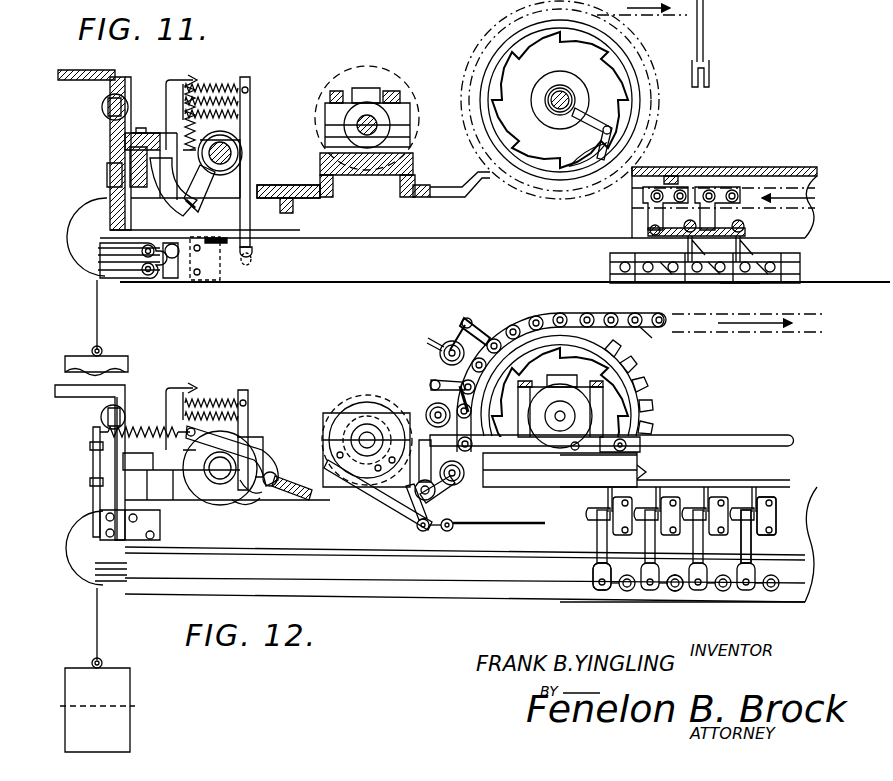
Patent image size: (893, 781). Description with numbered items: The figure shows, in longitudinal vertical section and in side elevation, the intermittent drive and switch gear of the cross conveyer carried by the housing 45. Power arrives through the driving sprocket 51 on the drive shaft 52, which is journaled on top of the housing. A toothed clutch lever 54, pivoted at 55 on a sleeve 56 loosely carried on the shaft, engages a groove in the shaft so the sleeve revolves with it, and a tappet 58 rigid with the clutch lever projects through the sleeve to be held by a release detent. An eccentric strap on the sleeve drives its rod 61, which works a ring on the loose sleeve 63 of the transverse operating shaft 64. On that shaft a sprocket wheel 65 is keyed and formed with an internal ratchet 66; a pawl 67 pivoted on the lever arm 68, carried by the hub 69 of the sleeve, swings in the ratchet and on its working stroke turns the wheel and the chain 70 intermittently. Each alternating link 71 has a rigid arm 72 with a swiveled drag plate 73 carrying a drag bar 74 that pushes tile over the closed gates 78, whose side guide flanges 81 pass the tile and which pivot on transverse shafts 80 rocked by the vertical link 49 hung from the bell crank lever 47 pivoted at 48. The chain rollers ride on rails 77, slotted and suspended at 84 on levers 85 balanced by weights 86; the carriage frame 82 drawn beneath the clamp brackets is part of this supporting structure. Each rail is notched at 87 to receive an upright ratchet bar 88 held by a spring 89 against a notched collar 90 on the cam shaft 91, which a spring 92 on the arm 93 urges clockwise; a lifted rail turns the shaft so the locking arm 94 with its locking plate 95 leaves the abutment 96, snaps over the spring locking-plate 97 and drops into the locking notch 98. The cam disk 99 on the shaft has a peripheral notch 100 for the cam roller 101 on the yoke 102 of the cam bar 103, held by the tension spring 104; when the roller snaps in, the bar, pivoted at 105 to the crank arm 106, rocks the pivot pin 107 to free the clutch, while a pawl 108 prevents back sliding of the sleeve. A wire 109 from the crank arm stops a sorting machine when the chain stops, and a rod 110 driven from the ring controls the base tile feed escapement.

In FIG. 11, the housing 45 is at (778, 160).
In FIG. 12, the housing 45 is at (777, 593).
In FIG. 12, the bell crank lever 47 is at (708, 505).
In FIG. 12, the pivot 48 is at (770, 516).
In FIG. 12, the vertically arranged link 49 is at (747, 547).
In FIG. 11, the driving sprocket 51 is at (363, 72).
In FIG. 11, the drive shaft 52 is at (376, 115).
In FIG. 12, the drive shaft 52 is at (342, 412).
In FIG. 12, the toothed clutch lever 54 is at (326, 448).
In FIG. 12, the pivot 55 is at (384, 420).
In FIG. 12, the sleeve 56 is at (350, 410).
In FIG. 12, the tappet 58 is at (434, 404).
In FIG. 12, the eccentric rod 61 is at (530, 446).
In FIG. 11, the loose sleeve 63 is at (546, 101).
In FIG. 11, the operating shaft 64 is at (548, 112).
In FIG. 12, the operating shaft 64 is at (573, 417).
In FIG. 12, the sprocket wheel 65 is at (642, 383).
In FIG. 11, the internal ratchet 66 is at (512, 60).
In FIG. 12, the internal ratchet 66 is at (560, 409).
In FIG. 11, the pawl 67 is at (568, 162).
In FIG. 11, the lever arm 68 is at (618, 125).
In FIG. 11, the hub 69 is at (557, 84).
In FIG. 12, the chain 70 is at (623, 305).
In FIG. 11, the alternating link 71 is at (665, 205).
In FIG. 12, the alternating link 71 is at (656, 336).
In FIG. 12, the rigid arm 72 is at (494, 343).
In FIG. 12, the drag plate 73 is at (466, 320).
In FIG. 11, the drag bar 74 is at (804, 250).
In FIG. 12, the drag bar 74 is at (440, 340).
In FIG. 11, the rails 77 is at (378, 275).
In FIG. 11, the horizontal gates 78 is at (737, 278).
In FIG. 12, the transverse shaft 80 is at (673, 592).
In FIG. 12, the side guide flanges 81 is at (616, 600).
In FIG. 11, the carriage frame 82 is at (612, 268).
In FIG. 11, the pivotal suspension 84 is at (172, 262).
In FIG. 11, the levers 85 is at (100, 266).
In FIG. 12, the levers 85 is at (97, 582).
In FIG. 11, the counterbalancing weights 86 is at (85, 358).
In FIG. 12, the counterbalancing weights 86 is at (74, 672).
In FIG. 11, the notch 87 is at (281, 233).
In FIG. 11, the upright ratchet bar 88 is at (251, 80).
In FIG. 12, the upright ratchet bar 88 is at (250, 392).
In FIG. 11, the spring 89 is at (216, 86).
In FIG. 12, the spring 89 is at (210, 400).
In FIG. 11, the notched collars 90 is at (236, 135).
In FIG. 11, the cam shaft 91 is at (233, 163).
In FIG. 12, the cam shaft 91 is at (220, 472).
In FIG. 11, the spring 92 is at (178, 78).
In FIG. 11, the arm 93 is at (118, 165).
In FIG. 11, the locking arm 94 is at (218, 178).
In FIG. 11, the locking plate 95 is at (184, 208).
In FIG. 11, the abutment 96 is at (110, 195).
In FIG. 11, the spring locking-plate 97 is at (213, 246).
In FIG. 11, the locking notch 98 is at (222, 245).
In FIG. 12, the cam disk 99 is at (208, 488).
In FIG. 12, the peripheral notch 100 is at (248, 498).
In FIG. 12, the cam roller 101 is at (292, 490).
In FIG. 12, the yoke 102 is at (257, 447).
In FIG. 12, the cam bar 103 is at (360, 510).
In FIG. 12, the tension spring 104 is at (125, 440).
In FIG. 12, the pivot 105 is at (422, 531).
In FIG. 12, the crank arm 106 is at (410, 508).
In FIG. 12, the pivot pin 107 is at (445, 487).
In FIG. 12, the pawl 108 is at (404, 408).
In FIG. 12, the wire 109 is at (530, 525).
In FIG. 12, the rod 110 is at (782, 446).